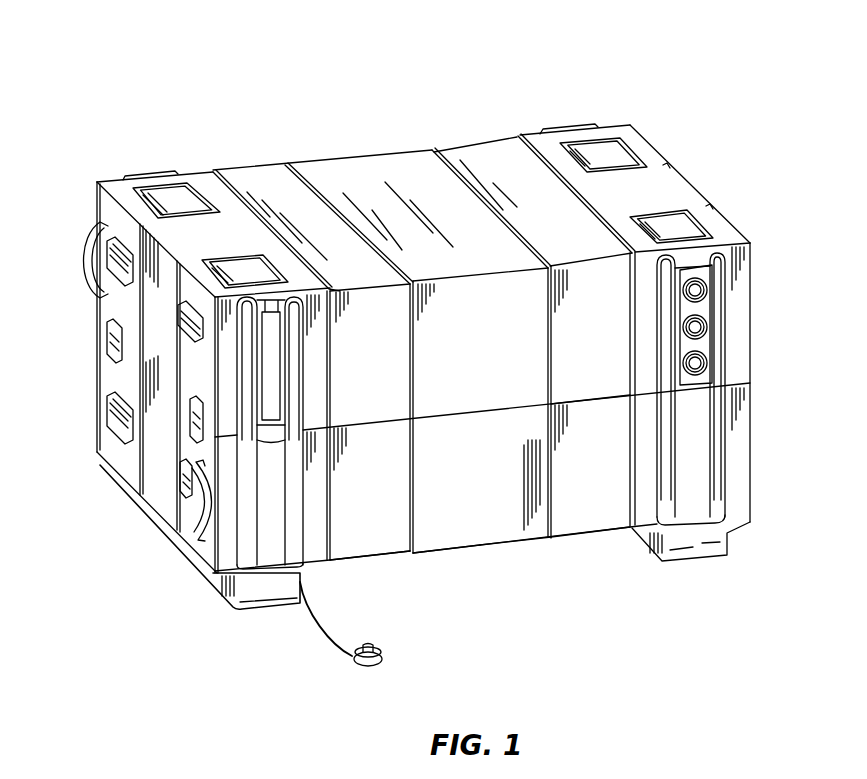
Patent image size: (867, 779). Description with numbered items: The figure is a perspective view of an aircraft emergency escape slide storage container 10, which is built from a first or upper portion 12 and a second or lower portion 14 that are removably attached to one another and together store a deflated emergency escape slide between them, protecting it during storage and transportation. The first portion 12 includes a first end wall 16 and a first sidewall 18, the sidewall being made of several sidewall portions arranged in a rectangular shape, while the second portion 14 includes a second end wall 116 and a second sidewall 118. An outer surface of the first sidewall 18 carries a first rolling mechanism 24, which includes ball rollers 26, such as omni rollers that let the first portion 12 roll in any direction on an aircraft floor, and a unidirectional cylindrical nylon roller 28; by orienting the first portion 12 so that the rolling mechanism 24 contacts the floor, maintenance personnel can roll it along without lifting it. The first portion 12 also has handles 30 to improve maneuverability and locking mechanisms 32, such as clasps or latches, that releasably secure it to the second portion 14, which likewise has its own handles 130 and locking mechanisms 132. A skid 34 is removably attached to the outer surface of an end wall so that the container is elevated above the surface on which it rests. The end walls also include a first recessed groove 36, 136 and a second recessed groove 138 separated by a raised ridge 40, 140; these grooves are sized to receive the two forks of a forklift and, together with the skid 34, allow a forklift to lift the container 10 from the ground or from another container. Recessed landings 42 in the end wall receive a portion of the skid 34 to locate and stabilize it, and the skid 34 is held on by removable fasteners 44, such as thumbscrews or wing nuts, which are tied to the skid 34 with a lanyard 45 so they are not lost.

The emergency escape slide storage container 10 is at (316, 50).
The first portion 12 is at (243, 183).
The second portion 14 is at (563, 510).
The first end wall 16 is at (407, 177).
The first sidewall 18 is at (108, 209).
The first rolling mechanism 24 is at (325, 366).
The ball rollers 26 is at (712, 326).
The cylindrical nylon roller 28 is at (277, 338).
The handles 30 is at (108, 277).
The locking mechanisms 32 is at (110, 345).
The skid 34 is at (207, 590).
The first recessed groove 36 is at (283, 180).
The raised ridge 40 is at (365, 178).
The recessed landings 42 is at (173, 200).
The removable fasteners 44 is at (327, 633).
The lanyard 45 is at (367, 667).
The second end wall 116 is at (507, 548).
The second sidewall 118 is at (108, 447).
The handles 130 is at (208, 492).
The locking mechanisms 132 is at (190, 427).
The first recessed groove 136 is at (377, 553).
The second recessed groove 138 is at (608, 530).
The raised ridge 140 is at (440, 553).